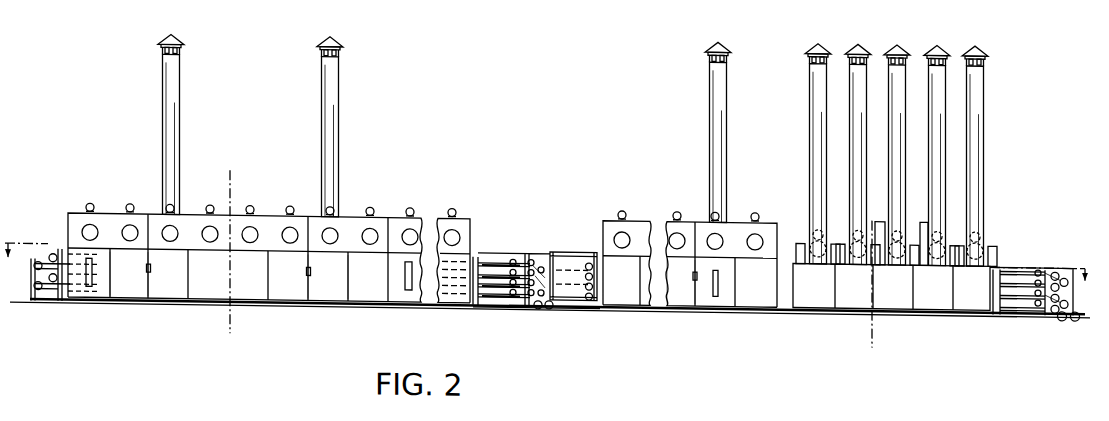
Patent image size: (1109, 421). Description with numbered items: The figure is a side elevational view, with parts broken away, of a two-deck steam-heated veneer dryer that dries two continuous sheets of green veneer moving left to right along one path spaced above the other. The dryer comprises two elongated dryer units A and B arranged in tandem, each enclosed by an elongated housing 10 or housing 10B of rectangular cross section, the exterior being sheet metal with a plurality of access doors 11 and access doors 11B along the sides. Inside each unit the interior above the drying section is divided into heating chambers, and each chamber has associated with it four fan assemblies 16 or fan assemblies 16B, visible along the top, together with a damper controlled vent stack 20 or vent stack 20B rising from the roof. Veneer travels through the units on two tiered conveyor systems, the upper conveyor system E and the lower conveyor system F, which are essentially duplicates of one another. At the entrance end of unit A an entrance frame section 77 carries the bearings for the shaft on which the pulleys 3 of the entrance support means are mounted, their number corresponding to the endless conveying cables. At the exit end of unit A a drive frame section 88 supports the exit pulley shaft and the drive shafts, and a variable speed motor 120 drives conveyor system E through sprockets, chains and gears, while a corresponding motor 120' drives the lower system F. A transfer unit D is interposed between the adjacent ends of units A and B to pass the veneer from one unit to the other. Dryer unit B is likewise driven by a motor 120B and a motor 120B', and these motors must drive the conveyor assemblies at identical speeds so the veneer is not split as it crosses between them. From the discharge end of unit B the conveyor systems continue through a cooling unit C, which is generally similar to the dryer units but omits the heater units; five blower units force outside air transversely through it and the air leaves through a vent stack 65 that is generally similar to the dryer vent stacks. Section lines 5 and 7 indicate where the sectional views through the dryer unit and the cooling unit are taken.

The housing 10 is at (67, 231).
The fan assemblies 16 is at (126, 199).
The vent stack 20 is at (179, 124).
The section line 5- 5 is at (229, 172).
The pulleys 3 is at (548, 274).
The entrance frame section 77 is at (34, 297).
The access doors 11 is at (163, 286).
The dryer unit A is at (361, 199).
The drive frame section 88 is at (550, 242).
The transfer unit D is at (560, 230).
The variable speed motor 120' is at (511, 325).
The variable speed motor 120 is at (576, 328).
The fan assemblies 16B is at (675, 198).
The dryer unit B is at (729, 203).
The housing 10B is at (780, 211).
The access doors 11B is at (707, 290).
The vent stack 20B is at (727, 116).
The vent stack 65 is at (979, 120).
The section line 7- 7 is at (874, 335).
The cooling unit C is at (991, 223).
The conveyor system E is at (1059, 256).
The conveyor system F is at (1075, 255).
The variable speed motor 120B' is at (1026, 336).
The variable speed motor 120B is at (1060, 348).